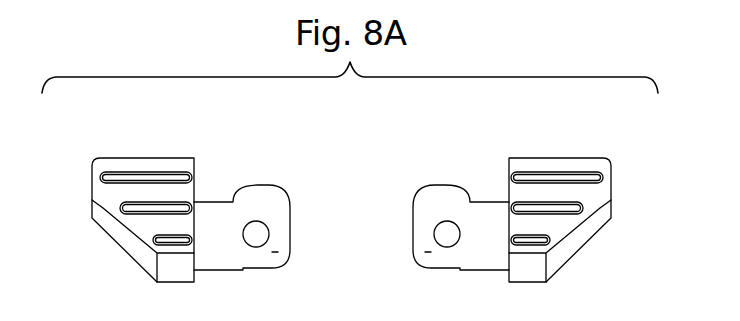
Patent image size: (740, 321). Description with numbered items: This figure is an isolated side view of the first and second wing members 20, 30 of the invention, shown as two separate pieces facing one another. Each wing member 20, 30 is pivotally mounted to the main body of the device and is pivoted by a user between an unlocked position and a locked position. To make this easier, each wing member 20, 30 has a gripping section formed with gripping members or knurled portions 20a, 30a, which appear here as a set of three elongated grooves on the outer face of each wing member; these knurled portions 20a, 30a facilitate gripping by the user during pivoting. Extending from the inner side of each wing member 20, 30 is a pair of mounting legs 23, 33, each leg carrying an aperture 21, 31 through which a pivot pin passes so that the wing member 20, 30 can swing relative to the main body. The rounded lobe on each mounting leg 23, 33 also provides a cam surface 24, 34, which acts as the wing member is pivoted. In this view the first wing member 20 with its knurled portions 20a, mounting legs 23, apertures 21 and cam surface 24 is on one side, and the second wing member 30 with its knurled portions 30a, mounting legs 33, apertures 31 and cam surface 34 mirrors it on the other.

The first wing member 20 is at (151, 158).
The knurled portions 20a is at (92, 175).
The cam surface 24 is at (270, 185).
The apertures 21 is at (256, 229).
The mounting legs 23 is at (278, 252).
The second wing member 30 is at (552, 158).
The knurled portions 30a is at (611, 175).
The cam surface 34 is at (432, 185).
The apertures 31 is at (446, 228).
The mounting legs 33 is at (425, 252).